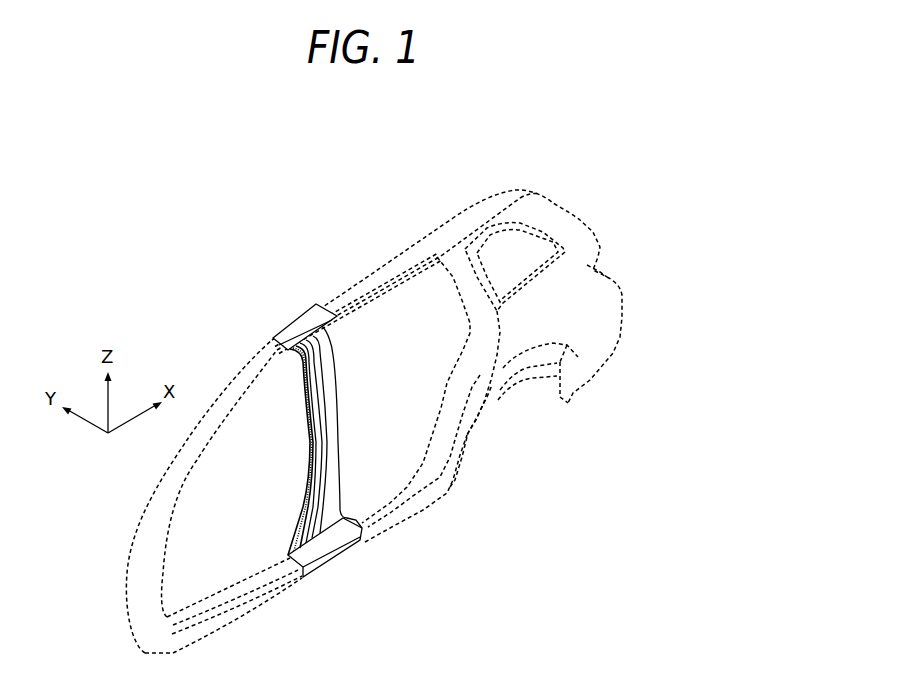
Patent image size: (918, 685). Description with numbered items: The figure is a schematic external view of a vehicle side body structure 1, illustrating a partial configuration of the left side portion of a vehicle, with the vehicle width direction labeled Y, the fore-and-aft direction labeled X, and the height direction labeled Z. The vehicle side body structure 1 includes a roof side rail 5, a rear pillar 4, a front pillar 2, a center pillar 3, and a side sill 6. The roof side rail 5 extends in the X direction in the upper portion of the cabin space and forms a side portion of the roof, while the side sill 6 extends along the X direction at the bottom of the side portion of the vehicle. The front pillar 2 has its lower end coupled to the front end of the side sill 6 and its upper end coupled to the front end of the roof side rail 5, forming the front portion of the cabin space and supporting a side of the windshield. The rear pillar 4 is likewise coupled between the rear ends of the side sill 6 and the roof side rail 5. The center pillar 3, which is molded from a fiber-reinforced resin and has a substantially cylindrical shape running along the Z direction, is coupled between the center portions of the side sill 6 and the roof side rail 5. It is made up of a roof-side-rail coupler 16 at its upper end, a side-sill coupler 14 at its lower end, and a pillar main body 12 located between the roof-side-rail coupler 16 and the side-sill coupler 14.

The vehicle side body structure 1 is at (540, 162).
The front pillar 2 is at (132, 496).
The center pillar 3 is at (352, 391).
The rear pillar 4 is at (448, 364).
The roof side rail 5 is at (384, 257).
The side sill 6 is at (414, 536).
The pillar main body 12 is at (338, 438).
The side-sill coupler 14 is at (330, 553).
The roof-side-rail coupler 16 is at (313, 306).